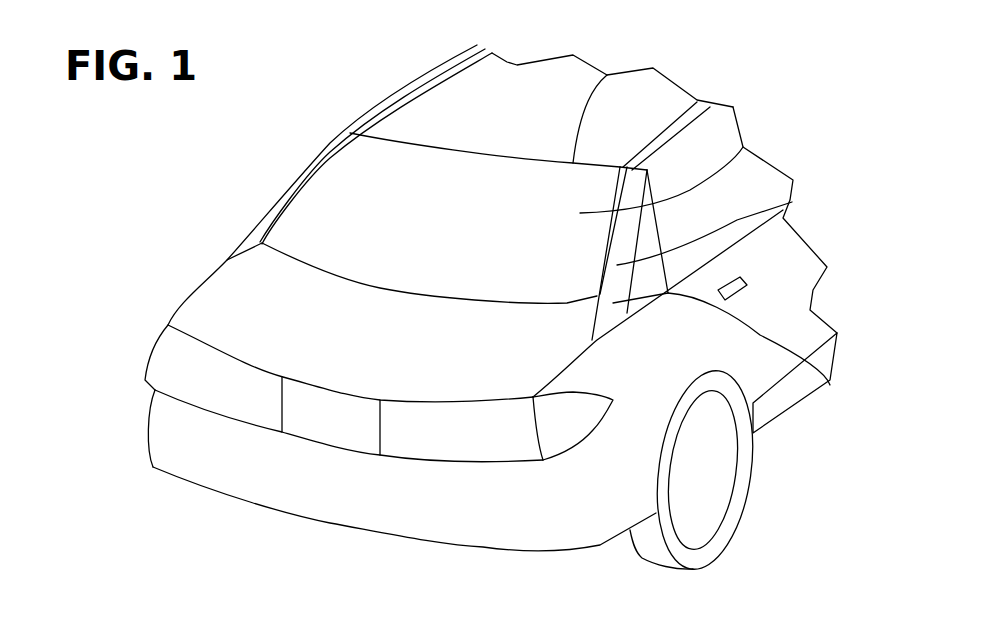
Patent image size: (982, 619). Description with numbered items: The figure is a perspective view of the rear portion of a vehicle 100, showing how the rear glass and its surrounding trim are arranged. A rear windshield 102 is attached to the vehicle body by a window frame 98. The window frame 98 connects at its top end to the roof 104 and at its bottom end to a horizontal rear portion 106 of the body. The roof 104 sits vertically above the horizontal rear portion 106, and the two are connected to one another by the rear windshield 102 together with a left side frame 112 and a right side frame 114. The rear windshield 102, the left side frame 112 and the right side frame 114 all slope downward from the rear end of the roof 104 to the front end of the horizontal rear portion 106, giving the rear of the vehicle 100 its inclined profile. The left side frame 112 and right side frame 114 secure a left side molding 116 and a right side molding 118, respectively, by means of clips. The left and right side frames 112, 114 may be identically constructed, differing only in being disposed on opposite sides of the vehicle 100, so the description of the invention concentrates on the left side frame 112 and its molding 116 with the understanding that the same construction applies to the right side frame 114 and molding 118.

The window frame 98 is at (612, 74).
The vehicle 100 is at (172, 238).
The rear windshield 102 is at (737, 143).
The roof 104 is at (448, 107).
The horizontal rear portion 106 is at (375, 360).
The left side frame 112 is at (318, 168).
The right side frame 114 is at (790, 202).
The left side molding 116 is at (268, 209).
The right side molding 118 is at (830, 385).